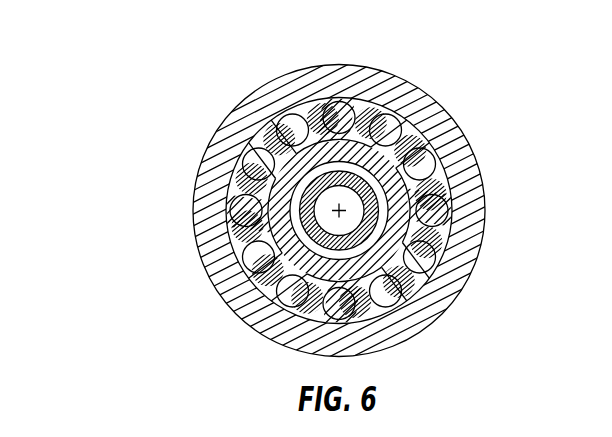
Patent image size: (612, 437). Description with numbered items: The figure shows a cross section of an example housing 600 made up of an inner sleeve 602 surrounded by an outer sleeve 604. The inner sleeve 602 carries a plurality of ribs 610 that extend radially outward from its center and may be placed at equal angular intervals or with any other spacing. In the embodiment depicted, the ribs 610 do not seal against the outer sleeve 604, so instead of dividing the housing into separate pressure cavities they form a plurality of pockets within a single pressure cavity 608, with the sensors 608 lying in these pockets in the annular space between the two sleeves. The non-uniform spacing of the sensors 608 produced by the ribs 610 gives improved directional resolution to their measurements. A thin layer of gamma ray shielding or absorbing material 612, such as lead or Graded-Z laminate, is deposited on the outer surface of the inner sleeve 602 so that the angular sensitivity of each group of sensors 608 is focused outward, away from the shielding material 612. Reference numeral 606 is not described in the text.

The housing 600 is at (299, 209).
The inner sleeve 602 is at (283, 292).
The outer sleeve 604 is at (484, 203).
The annular cavity 606 is at (360, 112).
The sensors 608 is at (240, 212).
The ribs 610 is at (243, 122).
The gamma ray shielding or absorbing material 612 is at (393, 290).